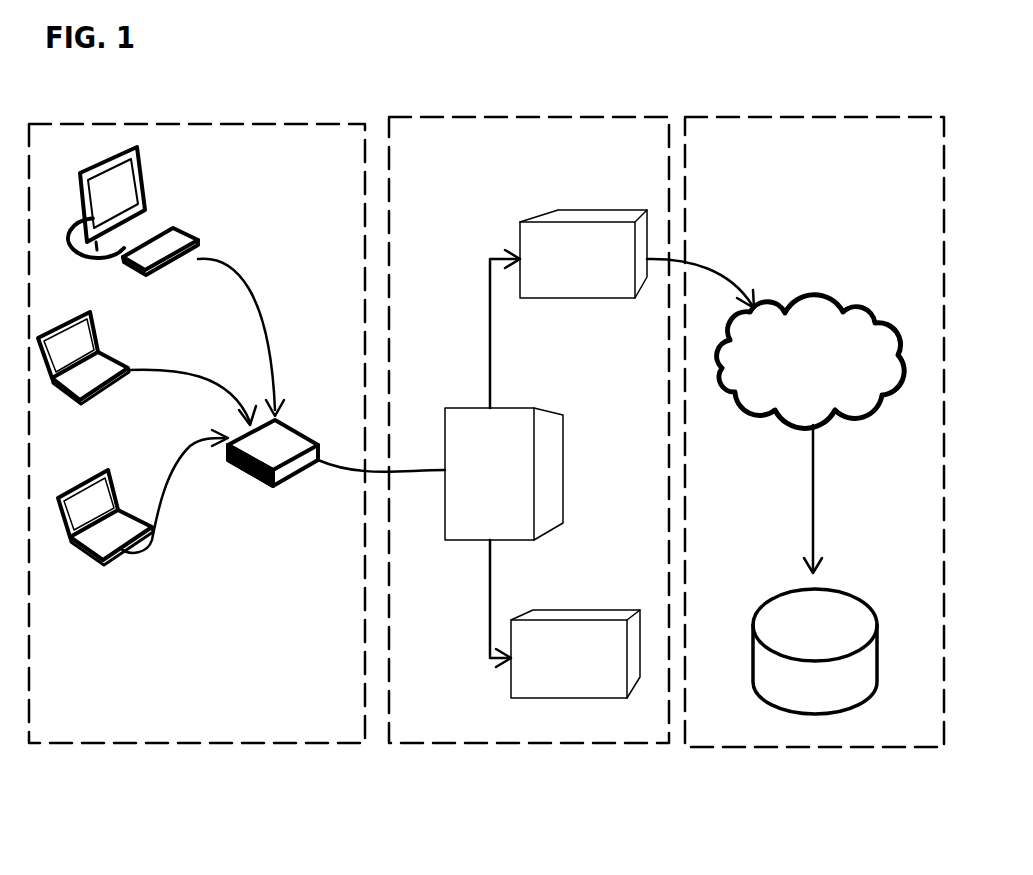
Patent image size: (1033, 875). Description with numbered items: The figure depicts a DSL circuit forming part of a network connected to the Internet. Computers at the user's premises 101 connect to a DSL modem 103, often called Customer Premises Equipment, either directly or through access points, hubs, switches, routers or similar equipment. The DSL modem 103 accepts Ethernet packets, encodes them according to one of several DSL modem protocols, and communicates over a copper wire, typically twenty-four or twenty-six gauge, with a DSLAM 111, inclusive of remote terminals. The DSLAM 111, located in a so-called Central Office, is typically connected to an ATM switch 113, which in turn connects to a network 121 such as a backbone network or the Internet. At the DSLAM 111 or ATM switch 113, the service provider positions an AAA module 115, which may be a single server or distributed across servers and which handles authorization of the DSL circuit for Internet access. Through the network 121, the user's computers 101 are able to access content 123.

The computers at the user's premises 101 is at (144, 183).
The DSL modem 103 is at (290, 425).
The DSLAM 111 is at (508, 410).
The ATM switch 113 is at (577, 210).
The AAA module 115 is at (568, 620).
The network 121 is at (813, 296).
The content 123 is at (857, 596).